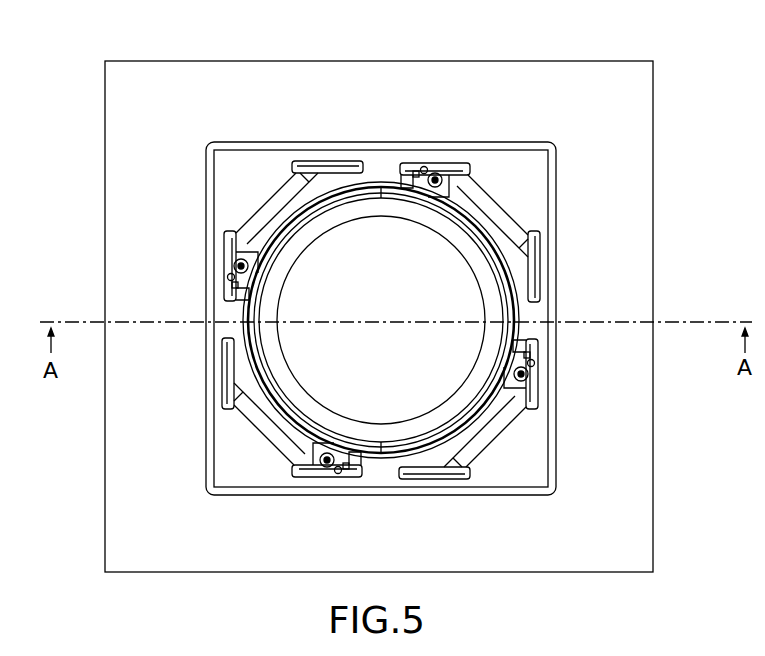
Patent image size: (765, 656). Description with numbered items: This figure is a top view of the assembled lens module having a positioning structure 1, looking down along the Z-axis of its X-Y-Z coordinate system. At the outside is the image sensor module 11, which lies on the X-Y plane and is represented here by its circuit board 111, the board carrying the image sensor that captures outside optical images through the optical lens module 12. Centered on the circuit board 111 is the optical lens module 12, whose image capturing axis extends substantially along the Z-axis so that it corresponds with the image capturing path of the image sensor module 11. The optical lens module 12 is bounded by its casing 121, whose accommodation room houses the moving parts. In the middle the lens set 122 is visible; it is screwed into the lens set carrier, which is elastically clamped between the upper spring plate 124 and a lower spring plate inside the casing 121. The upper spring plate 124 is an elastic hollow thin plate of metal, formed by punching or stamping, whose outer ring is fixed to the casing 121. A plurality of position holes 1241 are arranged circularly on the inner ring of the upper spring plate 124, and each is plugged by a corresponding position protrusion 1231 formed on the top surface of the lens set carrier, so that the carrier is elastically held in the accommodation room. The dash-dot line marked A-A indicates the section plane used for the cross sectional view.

The lens module having a positioning structure 1 is at (85, 240).
The image sensor module 11 is at (658, 425).
The circuit board 111 is at (627, 493).
The optical lens module 12 is at (562, 290).
The casing 121 is at (553, 258).
The lens set 122 is at (430, 265).
The upper spring plate 124 is at (452, 185).
The position protrusion 1231 is at (444, 184).
The position hole 1241 is at (433, 172).